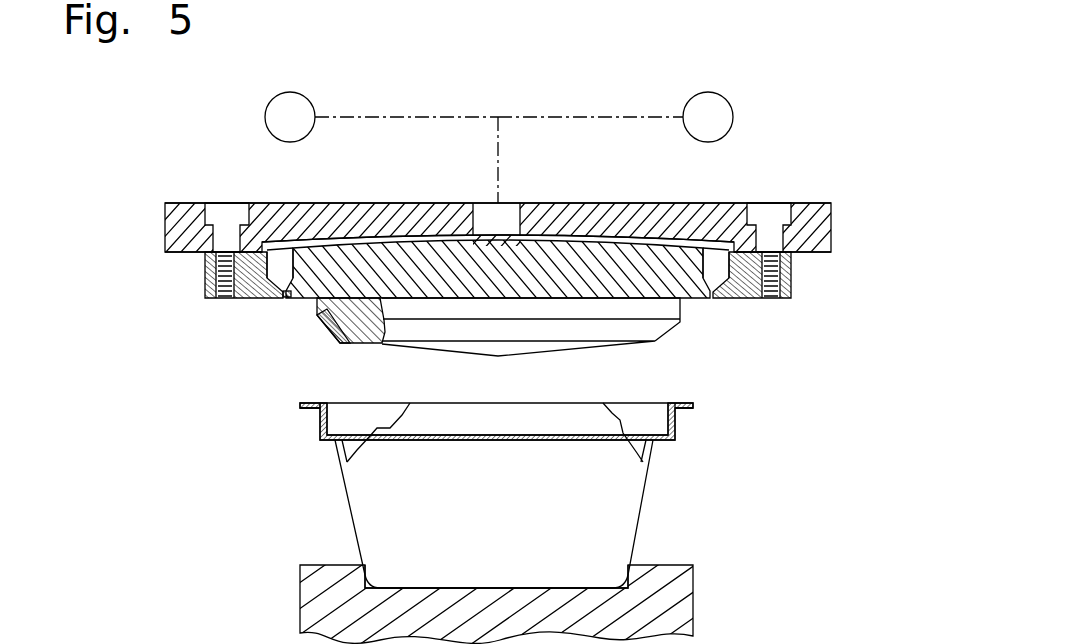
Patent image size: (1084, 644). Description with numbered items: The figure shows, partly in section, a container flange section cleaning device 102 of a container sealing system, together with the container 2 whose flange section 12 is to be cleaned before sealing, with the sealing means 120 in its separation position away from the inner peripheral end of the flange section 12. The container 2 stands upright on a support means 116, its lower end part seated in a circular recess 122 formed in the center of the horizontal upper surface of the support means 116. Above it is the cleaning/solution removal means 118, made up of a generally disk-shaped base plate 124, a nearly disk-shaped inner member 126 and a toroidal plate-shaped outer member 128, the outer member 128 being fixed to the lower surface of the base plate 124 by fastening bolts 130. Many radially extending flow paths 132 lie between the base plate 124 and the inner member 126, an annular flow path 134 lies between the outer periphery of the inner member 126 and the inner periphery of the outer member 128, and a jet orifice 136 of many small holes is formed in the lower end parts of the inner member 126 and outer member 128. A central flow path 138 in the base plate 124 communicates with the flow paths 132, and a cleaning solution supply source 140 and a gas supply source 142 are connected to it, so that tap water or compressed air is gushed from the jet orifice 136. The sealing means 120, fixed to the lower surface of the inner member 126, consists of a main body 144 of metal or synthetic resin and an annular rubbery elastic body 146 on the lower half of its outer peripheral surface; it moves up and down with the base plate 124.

The container 2 is at (656, 491).
The flange section 12 is at (307, 402).
The container flange section cleaning device 102 is at (858, 281).
The support means 116 is at (703, 604).
The cleaning/solution removal means 118 is at (183, 287).
The sealing means 120 is at (675, 331).
The circular recess 122 is at (530, 588).
The base plate 124 is at (635, 206).
The inner member 126 is at (575, 246).
The outer member 128 is at (260, 299).
The fastening bolts 130 is at (221, 207).
The flow paths 132 is at (358, 241).
The annular flow path 134 is at (292, 283).
The jet orifice 136 is at (290, 299).
The flow path 138 is at (514, 218).
The cleaning solution supply source 140 is at (305, 127).
The gas supply source 142 is at (723, 127).
The main body 144 is at (368, 344).
The annular rubbery elastic body 146 is at (328, 325).